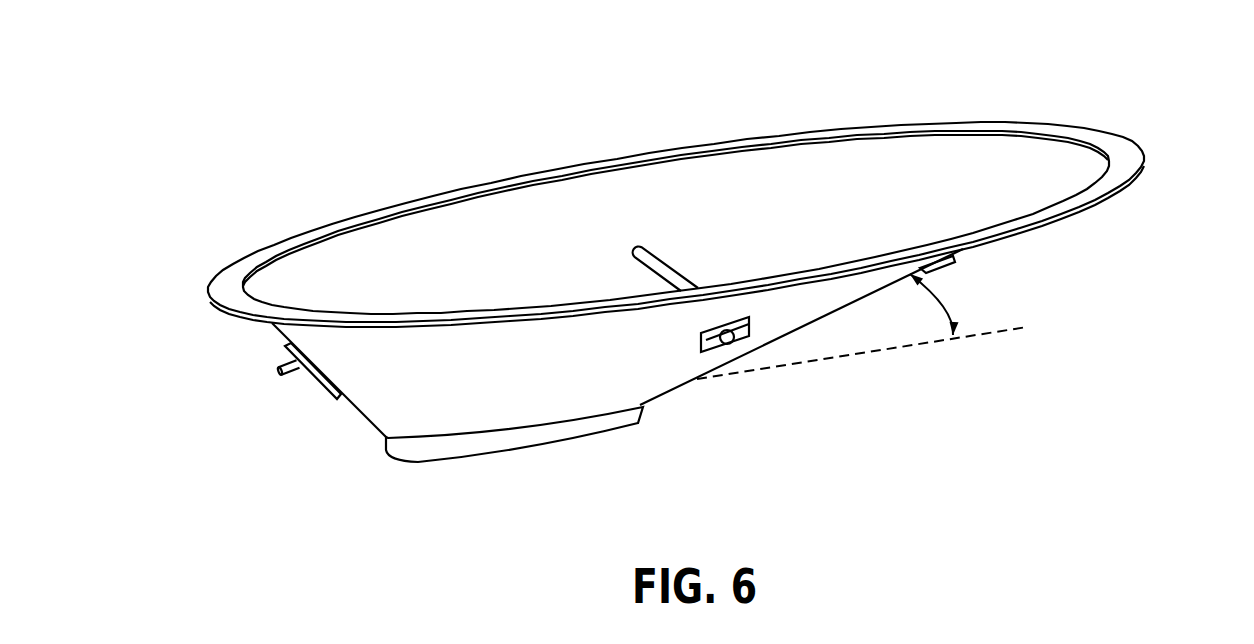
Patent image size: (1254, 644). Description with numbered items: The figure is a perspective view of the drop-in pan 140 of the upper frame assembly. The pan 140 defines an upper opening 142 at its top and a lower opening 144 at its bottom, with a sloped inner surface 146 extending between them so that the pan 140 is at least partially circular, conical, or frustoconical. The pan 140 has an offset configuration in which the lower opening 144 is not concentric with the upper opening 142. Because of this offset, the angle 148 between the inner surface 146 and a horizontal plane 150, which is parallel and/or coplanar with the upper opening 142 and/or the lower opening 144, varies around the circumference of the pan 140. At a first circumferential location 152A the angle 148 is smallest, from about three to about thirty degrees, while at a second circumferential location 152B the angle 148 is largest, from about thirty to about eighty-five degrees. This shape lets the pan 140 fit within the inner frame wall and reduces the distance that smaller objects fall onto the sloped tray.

The pan 140 is at (447, 118).
The upper opening 142 is at (720, 143).
The lower opening 144 is at (563, 443).
The inner surface 146 is at (927, 170).
The angle 148 is at (943, 303).
The horizontal plane 150 is at (1003, 327).
The first circumferential location 152A is at (1115, 148).
The second circumferential location 152B is at (233, 287).